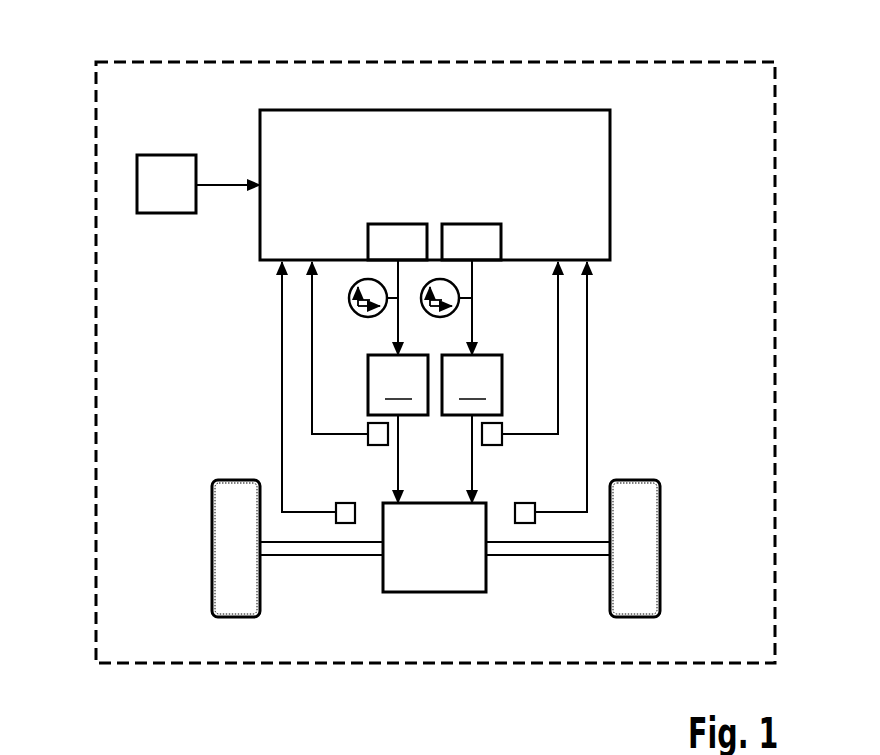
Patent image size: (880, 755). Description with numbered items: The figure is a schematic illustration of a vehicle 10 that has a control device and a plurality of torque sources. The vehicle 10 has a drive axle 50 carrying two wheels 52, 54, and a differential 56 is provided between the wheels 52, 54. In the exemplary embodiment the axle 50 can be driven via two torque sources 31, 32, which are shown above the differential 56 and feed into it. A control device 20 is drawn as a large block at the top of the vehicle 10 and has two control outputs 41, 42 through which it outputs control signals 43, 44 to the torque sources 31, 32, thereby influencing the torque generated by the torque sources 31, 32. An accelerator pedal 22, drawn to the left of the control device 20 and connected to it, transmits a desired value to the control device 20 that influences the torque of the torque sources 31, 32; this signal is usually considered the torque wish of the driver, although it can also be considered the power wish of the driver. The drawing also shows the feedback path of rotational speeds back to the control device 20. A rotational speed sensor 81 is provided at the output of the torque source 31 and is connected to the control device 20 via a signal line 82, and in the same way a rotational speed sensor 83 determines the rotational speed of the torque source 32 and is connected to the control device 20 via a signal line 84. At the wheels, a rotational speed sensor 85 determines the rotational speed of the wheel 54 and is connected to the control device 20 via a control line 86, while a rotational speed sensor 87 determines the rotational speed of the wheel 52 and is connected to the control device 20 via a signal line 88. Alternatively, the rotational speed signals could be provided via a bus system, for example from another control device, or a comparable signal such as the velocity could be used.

The vehicle 10 is at (573, 62).
The control device 20 is at (433, 110).
The accelerator pedal 22 is at (137, 185).
The torque source 31 is at (398, 337).
The torque source 32 is at (472, 337).
The control output 41 is at (368, 244).
The control output 42 is at (501, 243).
The control signal 43 is at (355, 316).
The control signal 44 is at (452, 312).
The drive axle 50 is at (326, 572).
The wheel 52 is at (235, 617).
The wheel 54 is at (633, 617).
The differential 56 is at (432, 592).
The rotational speed sensor 81 is at (390, 434).
The signal line 82 is at (312, 340).
The rotational speed sensor 83 is at (502, 428).
The signal line 84 is at (558, 340).
The rotational speed sensor 85 is at (525, 503).
The control line 86 is at (587, 393).
The rotational speed sensor 87 is at (343, 503).
The signal line 88 is at (282, 393).